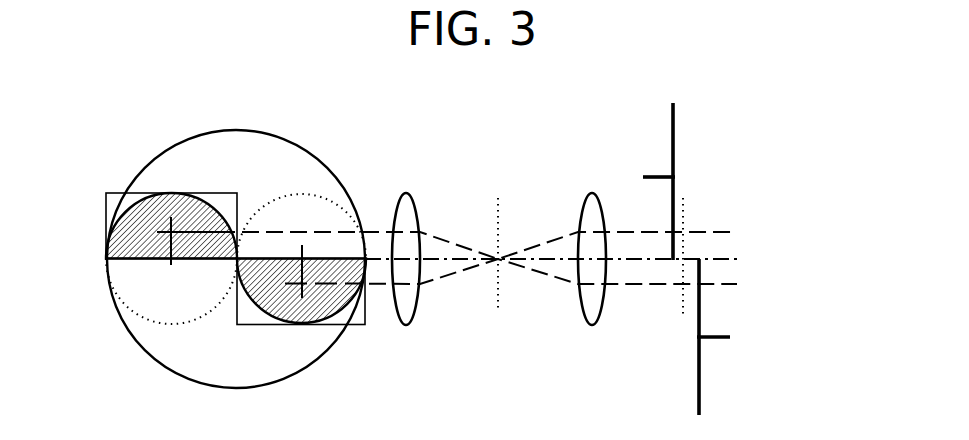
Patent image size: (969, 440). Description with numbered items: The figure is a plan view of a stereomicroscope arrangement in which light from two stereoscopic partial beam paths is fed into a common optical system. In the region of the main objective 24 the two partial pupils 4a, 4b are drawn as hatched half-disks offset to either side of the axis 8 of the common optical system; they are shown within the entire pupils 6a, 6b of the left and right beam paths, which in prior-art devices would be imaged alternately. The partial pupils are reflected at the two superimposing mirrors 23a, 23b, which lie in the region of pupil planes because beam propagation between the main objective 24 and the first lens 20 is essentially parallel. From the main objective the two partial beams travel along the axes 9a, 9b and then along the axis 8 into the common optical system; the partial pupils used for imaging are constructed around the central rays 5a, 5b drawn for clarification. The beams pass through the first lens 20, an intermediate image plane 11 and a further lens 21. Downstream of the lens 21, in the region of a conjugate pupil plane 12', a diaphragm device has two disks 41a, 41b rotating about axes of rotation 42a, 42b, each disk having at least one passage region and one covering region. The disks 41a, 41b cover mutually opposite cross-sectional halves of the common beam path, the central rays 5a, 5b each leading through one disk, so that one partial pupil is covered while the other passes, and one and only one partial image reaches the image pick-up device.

The main objective 24 is at (161, 366).
The superimposing mirror 23a is at (106, 238).
The superimposing mirror 23b is at (366, 308).
The entire pupil 6a is at (128, 308).
The entire pupil 6b is at (303, 192).
The partial pupil 4a is at (187, 198).
The partial pupil 4b is at (277, 319).
The axis 9a is at (171, 265).
The axis 9b is at (302, 246).
The central ray 5a is at (440, 240).
The central ray 5b is at (440, 278).
The axis of the common optical system 8 is at (737, 259).
The first lens 20 is at (397, 207).
The lens 21 is at (581, 213).
The intermediate image plane 11 is at (497, 320).
The conjugate pupil plane 12' is at (709, 244).
The disk 41a is at (671, 109).
The disk 41b is at (699, 391).
The axis of rotation 42a is at (643, 177).
The axis of rotation 42b is at (730, 337).